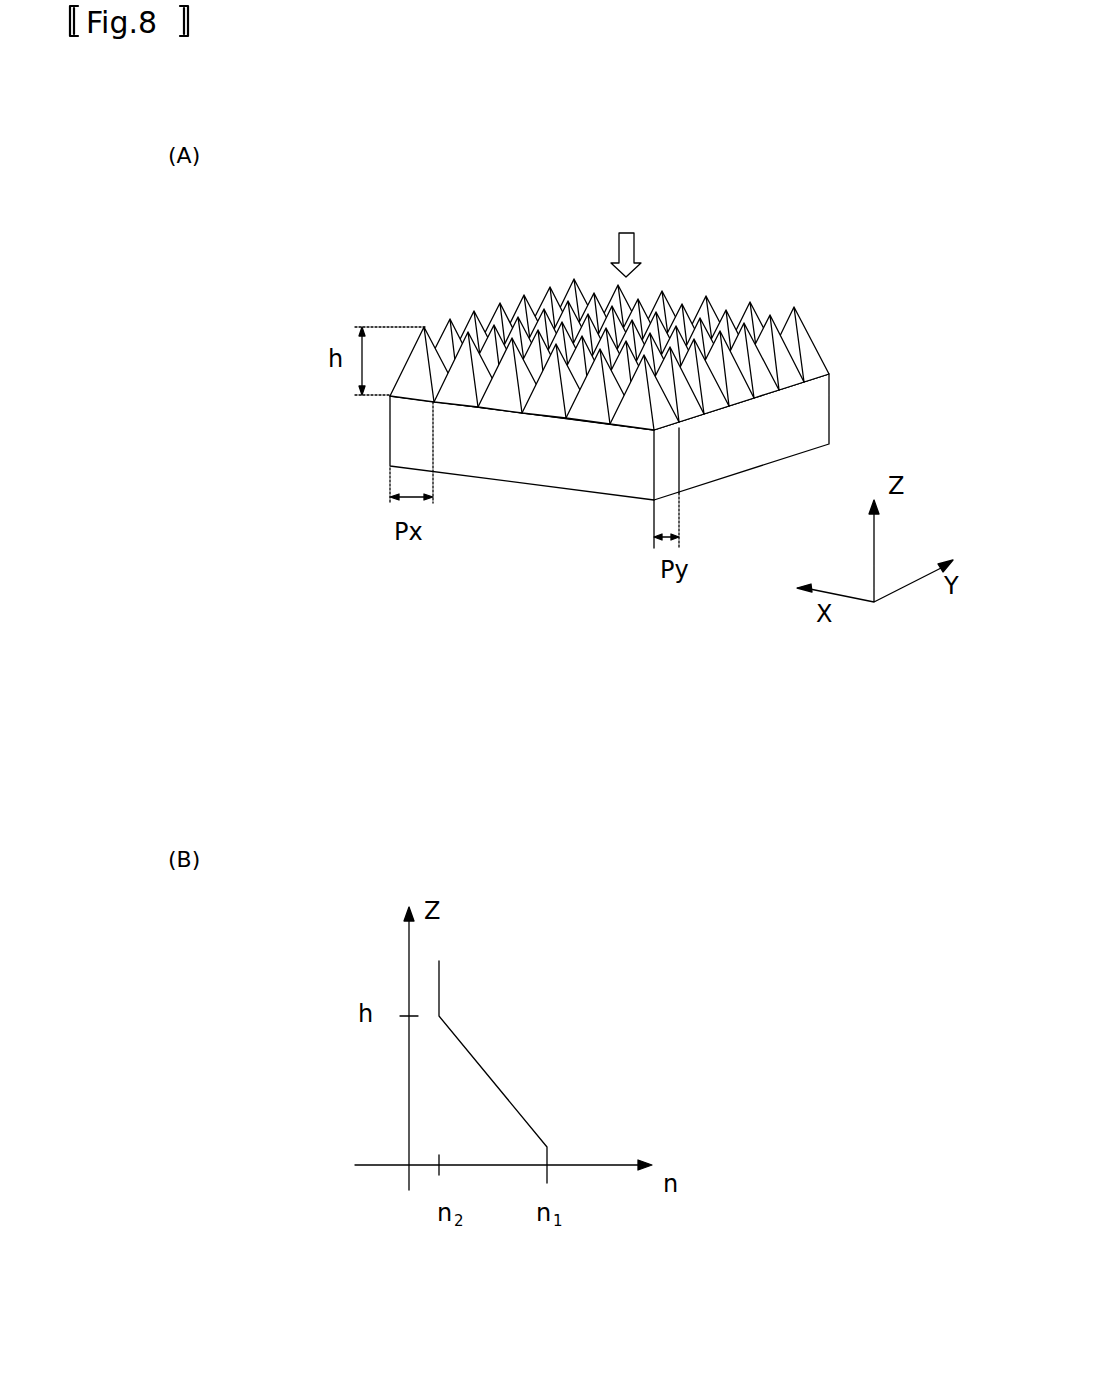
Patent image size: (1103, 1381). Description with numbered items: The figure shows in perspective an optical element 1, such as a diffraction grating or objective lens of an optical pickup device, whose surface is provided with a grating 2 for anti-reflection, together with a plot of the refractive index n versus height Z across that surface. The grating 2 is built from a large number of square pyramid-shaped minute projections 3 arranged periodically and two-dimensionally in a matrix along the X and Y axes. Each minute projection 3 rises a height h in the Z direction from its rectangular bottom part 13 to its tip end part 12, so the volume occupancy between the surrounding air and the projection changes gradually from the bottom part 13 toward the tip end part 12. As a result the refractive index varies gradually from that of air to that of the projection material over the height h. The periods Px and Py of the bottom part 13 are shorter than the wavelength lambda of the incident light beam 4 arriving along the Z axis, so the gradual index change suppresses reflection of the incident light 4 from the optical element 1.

The optical element 1 is at (827, 220).
The grating 2 is at (688, 276).
The square pyramid-shaped minute projection 3 is at (407, 369).
The incident light beam 4 is at (637, 231).
The tip end part 12 is at (423, 326).
The bottom part 13 is at (418, 400).